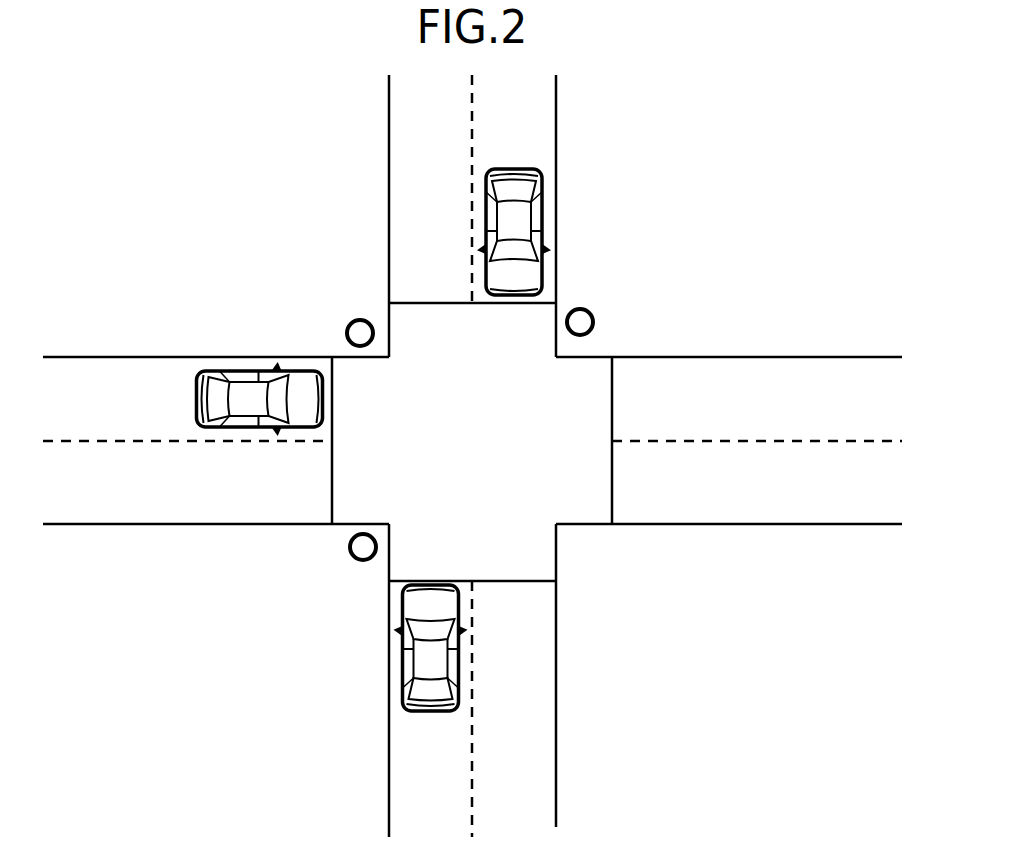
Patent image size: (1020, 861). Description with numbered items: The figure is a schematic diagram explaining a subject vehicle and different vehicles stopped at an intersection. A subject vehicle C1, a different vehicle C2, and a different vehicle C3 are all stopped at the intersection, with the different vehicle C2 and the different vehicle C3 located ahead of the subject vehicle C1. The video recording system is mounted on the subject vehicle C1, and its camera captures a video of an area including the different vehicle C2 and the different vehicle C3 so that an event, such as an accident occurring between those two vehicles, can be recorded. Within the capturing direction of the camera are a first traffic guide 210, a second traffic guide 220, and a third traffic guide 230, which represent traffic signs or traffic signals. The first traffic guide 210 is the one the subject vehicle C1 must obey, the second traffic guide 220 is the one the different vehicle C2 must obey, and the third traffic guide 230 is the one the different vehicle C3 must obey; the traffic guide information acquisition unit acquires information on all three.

The first traffic guide 210 is at (352, 560).
The second traffic guide 220 is at (348, 319).
The third traffic guide 230 is at (590, 308).
The subject vehicle C1 is at (428, 713).
The different vehicle C2 is at (514, 165).
The different vehicle C3 is at (190, 392).